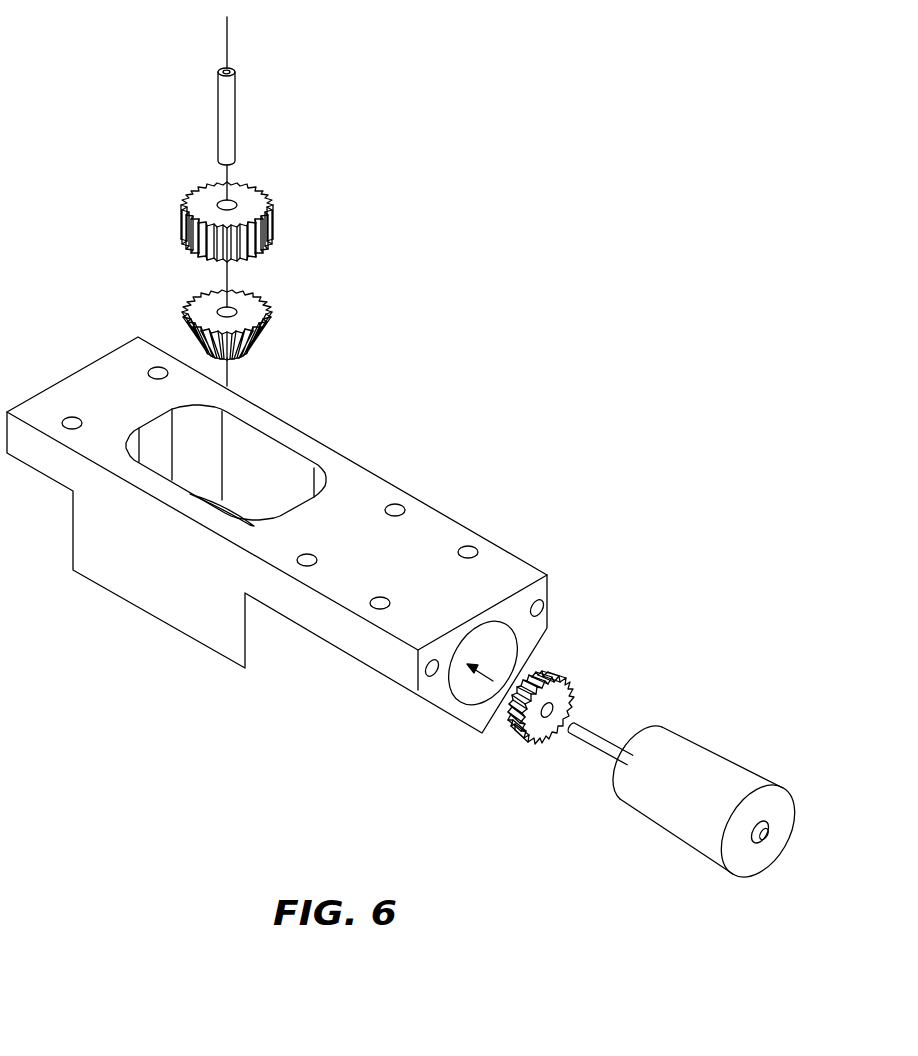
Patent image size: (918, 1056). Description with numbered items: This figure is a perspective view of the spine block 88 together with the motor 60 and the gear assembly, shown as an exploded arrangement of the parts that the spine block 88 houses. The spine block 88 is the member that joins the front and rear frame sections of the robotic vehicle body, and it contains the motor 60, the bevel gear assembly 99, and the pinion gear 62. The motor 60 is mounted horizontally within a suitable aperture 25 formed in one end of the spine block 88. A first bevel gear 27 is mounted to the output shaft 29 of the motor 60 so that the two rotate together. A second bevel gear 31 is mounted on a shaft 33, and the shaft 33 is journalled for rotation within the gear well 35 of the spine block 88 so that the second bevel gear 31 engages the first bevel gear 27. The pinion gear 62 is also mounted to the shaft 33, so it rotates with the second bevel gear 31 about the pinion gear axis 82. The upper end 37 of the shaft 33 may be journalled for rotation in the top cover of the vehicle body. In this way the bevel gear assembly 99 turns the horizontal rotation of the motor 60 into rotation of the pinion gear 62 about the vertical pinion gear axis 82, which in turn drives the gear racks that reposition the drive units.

The pinion gear axis 82 is at (227, 28).
The upper end 37 is at (237, 68).
The shaft 33 is at (271, 98).
The pinion gear 62 is at (270, 214).
The second bevel gear 31 is at (270, 312).
The bevel gear assembly 99 is at (215, 271).
The gear well 35 is at (267, 435).
The spine block 88 is at (302, 535).
The aperture 25 is at (533, 640).
The first bevel gear 27 is at (562, 670).
The output shaft 29 is at (610, 733).
The motor 60 is at (733, 755).